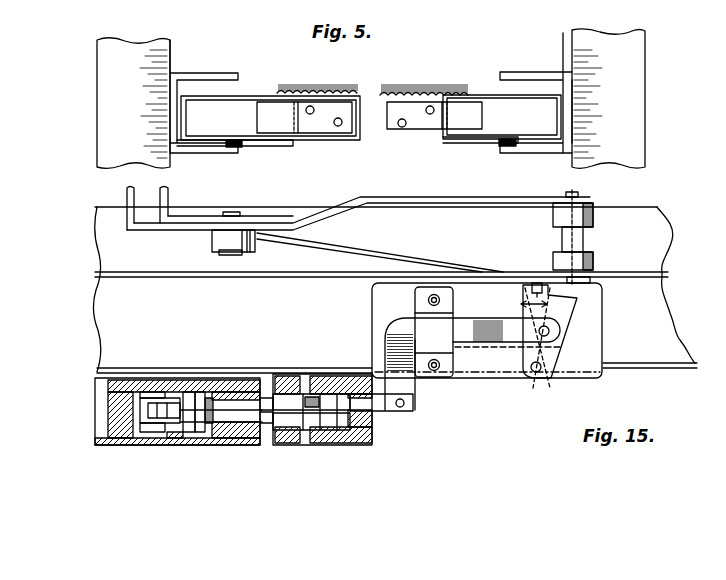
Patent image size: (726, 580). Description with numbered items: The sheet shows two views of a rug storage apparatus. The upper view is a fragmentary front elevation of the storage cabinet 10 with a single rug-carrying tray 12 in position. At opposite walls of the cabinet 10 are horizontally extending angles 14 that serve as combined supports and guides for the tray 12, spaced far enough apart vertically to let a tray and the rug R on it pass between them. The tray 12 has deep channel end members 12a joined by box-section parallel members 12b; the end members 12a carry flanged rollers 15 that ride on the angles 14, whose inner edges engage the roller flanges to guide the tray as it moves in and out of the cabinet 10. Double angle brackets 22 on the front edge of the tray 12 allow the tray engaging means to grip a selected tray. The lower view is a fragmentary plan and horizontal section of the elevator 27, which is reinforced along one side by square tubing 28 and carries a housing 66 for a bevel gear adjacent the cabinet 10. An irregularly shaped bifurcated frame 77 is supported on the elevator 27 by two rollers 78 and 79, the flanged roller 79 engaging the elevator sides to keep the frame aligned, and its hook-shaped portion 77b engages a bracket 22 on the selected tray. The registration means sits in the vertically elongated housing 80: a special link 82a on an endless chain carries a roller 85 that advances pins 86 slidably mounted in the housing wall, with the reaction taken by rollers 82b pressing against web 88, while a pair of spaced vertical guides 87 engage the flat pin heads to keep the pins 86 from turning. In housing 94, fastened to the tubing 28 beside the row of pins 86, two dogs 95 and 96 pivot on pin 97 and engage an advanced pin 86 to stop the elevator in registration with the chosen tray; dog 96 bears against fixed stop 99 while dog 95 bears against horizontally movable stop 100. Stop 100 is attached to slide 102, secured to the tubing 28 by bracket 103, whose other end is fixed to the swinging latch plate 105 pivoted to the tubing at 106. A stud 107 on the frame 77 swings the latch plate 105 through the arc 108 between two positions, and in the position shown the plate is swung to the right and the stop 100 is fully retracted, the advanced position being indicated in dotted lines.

In FIG. 5, the storage cabinet 10 is at (108, 103).
In FIG. 5, the angles 14 is at (210, 74).
In FIG. 5, the rug-carrying tray 12 is at (369, 120).
In FIG. 5, the end members 12a is at (246, 95).
In FIG. 5, the parallel members 12b is at (343, 133).
In FIG. 5, the rollers 15 is at (240, 143).
In FIG. 5, the double angle brackets 22 is at (315, 123).
In FIG. 5, the rug R is at (435, 87).
In FIG. 15, the elevator 27 is at (643, 217).
In FIG. 15, the square tubing 28 is at (380, 290).
In FIG. 15, the housing 66 is at (725, 212).
In FIG. 15, the bifurcated frame 77 is at (365, 247).
In FIG. 15, the hook-shaped portion 77b is at (125, 192).
In FIG. 15, the roller 78 is at (220, 238).
In FIG. 15, the roller 79 is at (555, 258).
In FIG. 15, the housing 80 is at (157, 444).
In FIG. 15, the special link 82a is at (138, 392).
In FIG. 15, the rollers 82b is at (140, 413).
In FIG. 15, the roller 85 is at (155, 403).
In FIG. 15, the pins 86 is at (233, 403).
In FIG. 15, the guides 87 is at (192, 390).
In FIG. 15, the web 88 is at (120, 405).
In FIG. 15, the housing 94 is at (370, 437).
In FIG. 15, the dog 95 is at (267, 400).
In FIG. 15, the dog 96 is at (273, 430).
In FIG. 15, the pin 97 is at (303, 437).
In FIG. 15, the fixed stop 99 is at (347, 437).
In FIG. 15, the stop 100 is at (352, 377).
In FIG. 15, the slide 102 is at (497, 345).
In FIG. 15, the bracket 103 is at (425, 323).
In FIG. 15, the latch plate 105 is at (562, 313).
In FIG. 15, the pivot 106 is at (547, 380).
In FIG. 15, the stud 107 is at (560, 292).
In FIG. 15, the arc 108 is at (521, 304).